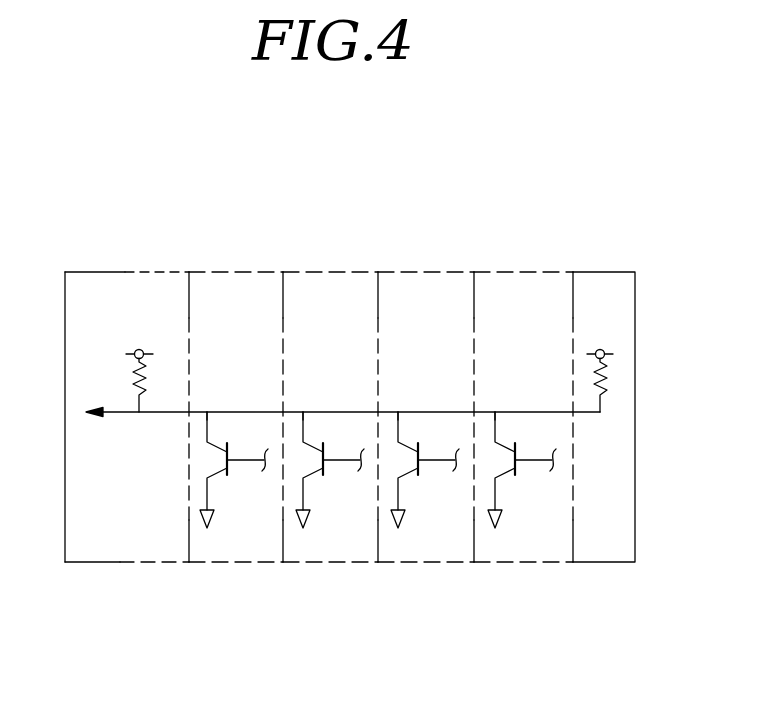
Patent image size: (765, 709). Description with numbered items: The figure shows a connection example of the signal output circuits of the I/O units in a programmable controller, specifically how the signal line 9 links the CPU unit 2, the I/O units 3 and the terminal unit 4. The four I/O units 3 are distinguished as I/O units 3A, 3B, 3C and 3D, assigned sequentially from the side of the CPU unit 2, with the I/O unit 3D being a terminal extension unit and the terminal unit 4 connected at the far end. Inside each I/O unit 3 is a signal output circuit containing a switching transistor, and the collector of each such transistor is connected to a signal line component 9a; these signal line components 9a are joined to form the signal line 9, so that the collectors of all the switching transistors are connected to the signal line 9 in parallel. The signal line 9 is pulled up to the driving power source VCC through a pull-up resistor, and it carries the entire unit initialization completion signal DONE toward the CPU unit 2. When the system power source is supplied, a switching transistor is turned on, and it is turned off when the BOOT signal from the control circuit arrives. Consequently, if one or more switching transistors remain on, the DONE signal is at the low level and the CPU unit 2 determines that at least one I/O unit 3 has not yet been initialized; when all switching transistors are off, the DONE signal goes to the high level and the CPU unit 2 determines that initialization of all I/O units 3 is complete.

The CPU unit 2 is at (112, 272).
The I/O unit 3 is at (381, 388).
The I/O unit 3A is at (255, 272).
The I/O unit 3B is at (335, 272).
The I/O unit 3C is at (432, 272).
The I/O unit 3D is at (520, 272).
The terminal unit 4 is at (610, 272).
The signal line 9 is at (113, 412).
The signal line component 9a is at (240, 412).